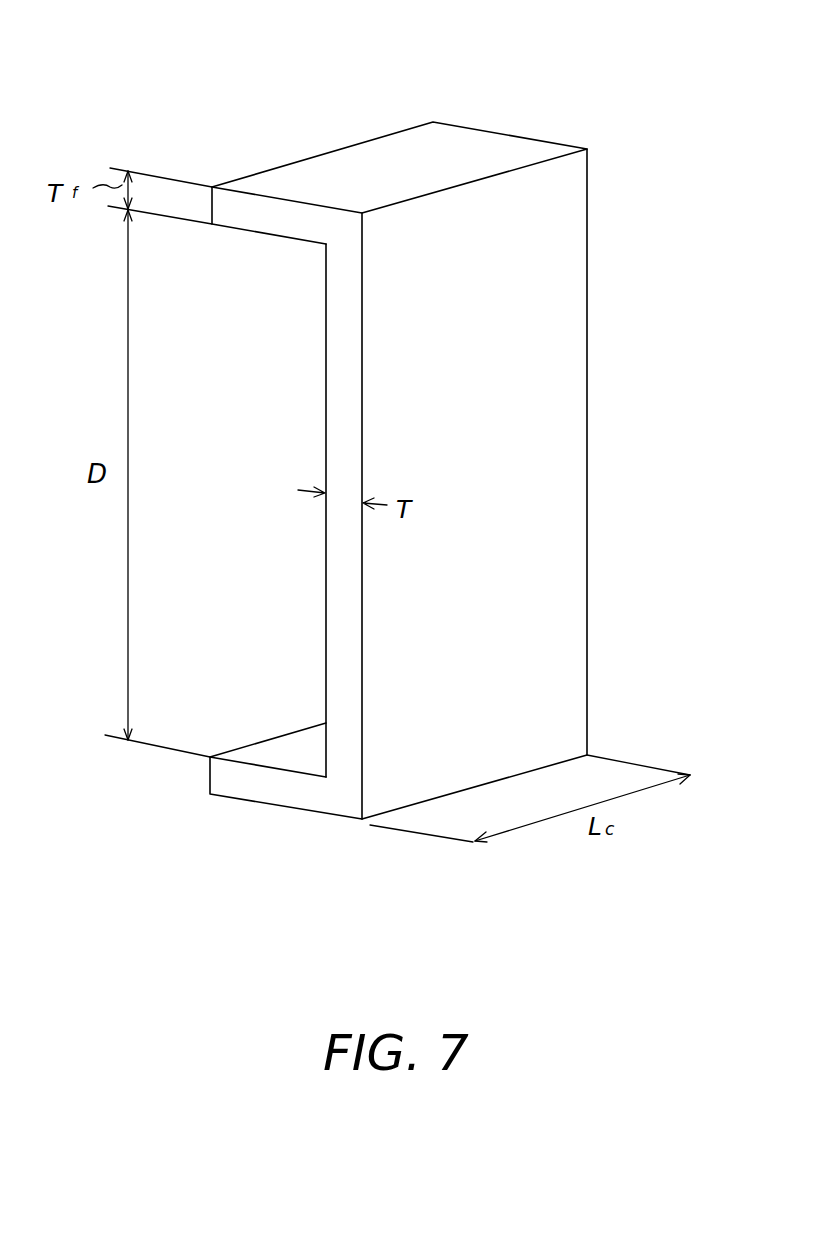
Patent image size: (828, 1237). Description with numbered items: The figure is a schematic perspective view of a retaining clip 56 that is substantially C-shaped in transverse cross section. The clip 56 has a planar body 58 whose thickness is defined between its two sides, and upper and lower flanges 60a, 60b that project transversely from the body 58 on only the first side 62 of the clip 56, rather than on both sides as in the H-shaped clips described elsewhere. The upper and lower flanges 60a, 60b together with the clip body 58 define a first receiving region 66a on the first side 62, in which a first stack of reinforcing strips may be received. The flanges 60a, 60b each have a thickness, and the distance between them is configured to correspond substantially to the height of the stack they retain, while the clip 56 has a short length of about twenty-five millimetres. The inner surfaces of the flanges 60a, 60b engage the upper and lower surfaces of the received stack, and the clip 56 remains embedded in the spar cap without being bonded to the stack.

The retaining clip 56 is at (172, 62).
The body 58 is at (348, 387).
The upper flange 60a is at (207, 167).
The lower flange 60b is at (182, 776).
The first side 62 is at (230, 441).
The first receiving region 66a is at (279, 554).